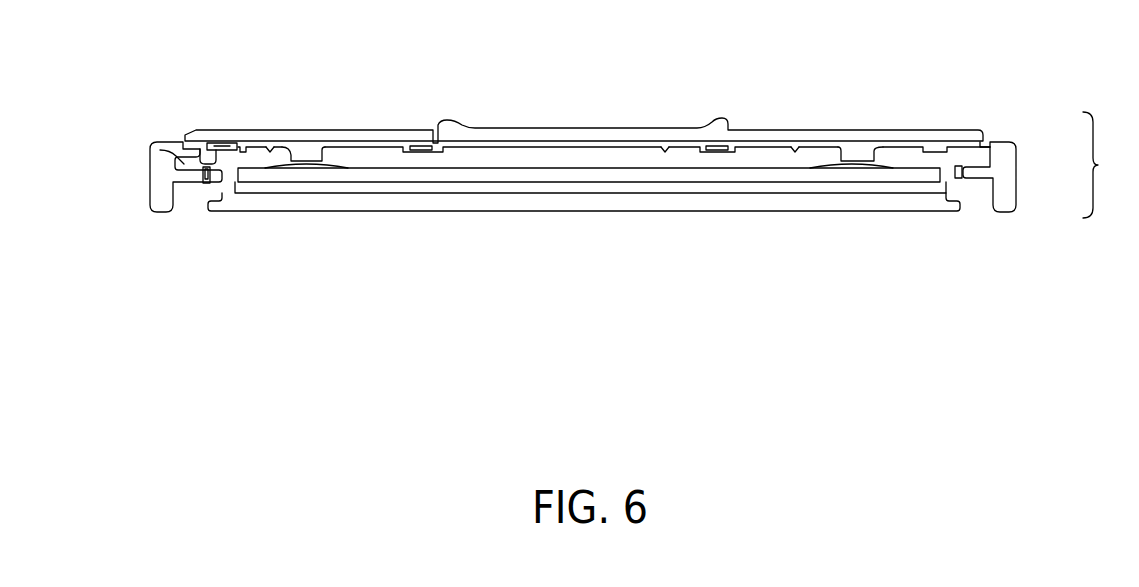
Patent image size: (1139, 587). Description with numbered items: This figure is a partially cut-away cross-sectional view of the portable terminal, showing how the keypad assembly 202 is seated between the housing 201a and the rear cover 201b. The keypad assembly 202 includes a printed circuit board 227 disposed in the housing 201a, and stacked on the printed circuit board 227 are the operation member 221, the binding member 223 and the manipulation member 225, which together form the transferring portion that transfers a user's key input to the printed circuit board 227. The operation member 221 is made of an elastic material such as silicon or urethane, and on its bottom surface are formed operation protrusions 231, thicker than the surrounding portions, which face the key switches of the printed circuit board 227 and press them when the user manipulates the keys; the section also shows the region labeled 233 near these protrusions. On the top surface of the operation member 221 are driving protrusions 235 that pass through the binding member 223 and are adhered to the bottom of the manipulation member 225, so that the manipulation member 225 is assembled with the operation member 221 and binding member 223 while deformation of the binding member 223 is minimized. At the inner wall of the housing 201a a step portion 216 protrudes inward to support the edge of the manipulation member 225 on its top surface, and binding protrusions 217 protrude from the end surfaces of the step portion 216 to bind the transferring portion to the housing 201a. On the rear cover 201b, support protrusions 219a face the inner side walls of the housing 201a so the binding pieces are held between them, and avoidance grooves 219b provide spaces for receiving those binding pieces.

The housing 201a is at (144, 179).
The rear cover 201b is at (258, 216).
The keypad assembly 202 is at (1111, 165).
The step portion 216 is at (187, 162).
The binding protrusion 217 is at (213, 145).
The support protrusion 219a is at (237, 140).
The avoidance groove 219b is at (207, 180).
The operation member 221 is at (985, 172).
The binding member 223 is at (975, 146).
The manipulation member 225 is at (967, 135).
The printed circuit board 227 is at (965, 210).
The operation protrusion 231 is at (328, 154).
The dome switch 233 is at (312, 168).
The driving protrusion 235 is at (270, 146).